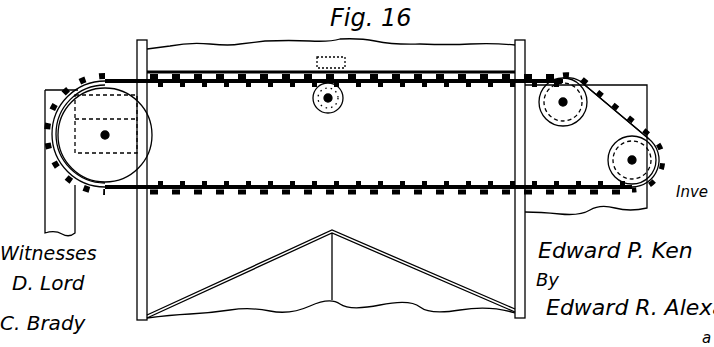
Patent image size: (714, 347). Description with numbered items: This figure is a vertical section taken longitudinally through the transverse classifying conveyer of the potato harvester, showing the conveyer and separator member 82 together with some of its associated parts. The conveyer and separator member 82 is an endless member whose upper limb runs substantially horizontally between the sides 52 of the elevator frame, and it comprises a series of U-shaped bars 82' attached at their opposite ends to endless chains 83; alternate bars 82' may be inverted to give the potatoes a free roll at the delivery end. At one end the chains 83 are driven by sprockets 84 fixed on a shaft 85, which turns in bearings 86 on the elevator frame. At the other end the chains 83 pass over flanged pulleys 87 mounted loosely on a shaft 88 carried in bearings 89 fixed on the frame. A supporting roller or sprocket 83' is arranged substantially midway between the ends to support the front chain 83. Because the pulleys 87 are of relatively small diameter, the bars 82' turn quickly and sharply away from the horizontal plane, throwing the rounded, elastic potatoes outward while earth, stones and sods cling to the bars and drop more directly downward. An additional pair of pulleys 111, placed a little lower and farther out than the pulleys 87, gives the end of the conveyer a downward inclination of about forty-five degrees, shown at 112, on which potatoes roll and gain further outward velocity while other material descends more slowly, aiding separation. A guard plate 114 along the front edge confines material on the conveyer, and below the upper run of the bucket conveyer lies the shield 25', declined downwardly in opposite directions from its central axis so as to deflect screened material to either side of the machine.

The shield 25' is at (331, 273).
The sides 52 is at (149, 212).
The transverse conveyer and separator member 82 is at (334, 94).
The U-shaped bars 82' is at (350, 136).
The endless chains 83 is at (355, 133).
The supporting roller or sprocket 83' is at (330, 110).
The sprockets 84 is at (155, 141).
The shaft 85 is at (105, 142).
The bearings 86 is at (105, 135).
The flanged pulleys 87 is at (569, 102).
The shaft 88 is at (566, 108).
The bearings 89 is at (607, 85).
The additional pair of pulleys 111 is at (640, 156).
The inclined end of conveyer 112 is at (627, 113).
The guard plate 114 is at (222, 64).